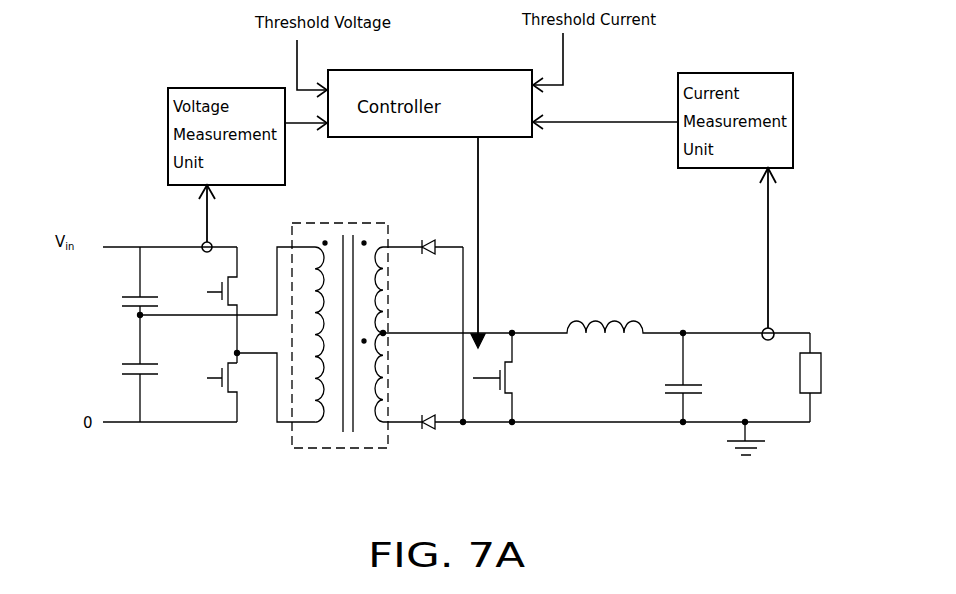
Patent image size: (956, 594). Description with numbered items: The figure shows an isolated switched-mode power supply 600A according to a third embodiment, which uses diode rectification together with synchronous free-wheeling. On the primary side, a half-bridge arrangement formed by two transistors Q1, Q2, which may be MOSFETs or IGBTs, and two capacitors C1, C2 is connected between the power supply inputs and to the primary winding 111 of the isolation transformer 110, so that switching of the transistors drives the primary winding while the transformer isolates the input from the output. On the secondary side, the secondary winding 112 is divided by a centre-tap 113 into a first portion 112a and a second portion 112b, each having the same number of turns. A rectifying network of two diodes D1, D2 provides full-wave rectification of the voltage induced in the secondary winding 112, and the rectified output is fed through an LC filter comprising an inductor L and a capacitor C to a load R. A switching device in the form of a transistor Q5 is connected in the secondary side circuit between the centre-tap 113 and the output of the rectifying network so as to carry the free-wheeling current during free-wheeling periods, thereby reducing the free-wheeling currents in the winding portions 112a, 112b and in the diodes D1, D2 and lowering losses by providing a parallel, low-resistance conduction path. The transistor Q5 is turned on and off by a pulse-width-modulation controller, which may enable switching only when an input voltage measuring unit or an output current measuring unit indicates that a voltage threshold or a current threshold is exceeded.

The isolation transformer 110 is at (335, 222).
The primary winding 111 is at (308, 440).
The secondary winding 112 is at (365, 440).
The first portion of the secondary winding 112a is at (376, 277).
The second portion of the secondary winding 112b is at (386, 384).
The centre-tap 113 is at (388, 337).
The isolated SMPS 600A is at (601, 230).
The transistor Q1 is at (212, 305).
The transistor Q2 is at (212, 392).
The switching device transistor Q5 is at (492, 377).
The capacitor C1 is at (119, 305).
The capacitor C2 is at (119, 393).
The diode D1 is at (423, 236).
The diode D2 is at (423, 438).
The inductor L is at (661, 307).
The capacitor of the LC filter C is at (694, 377).
The load R is at (825, 377).